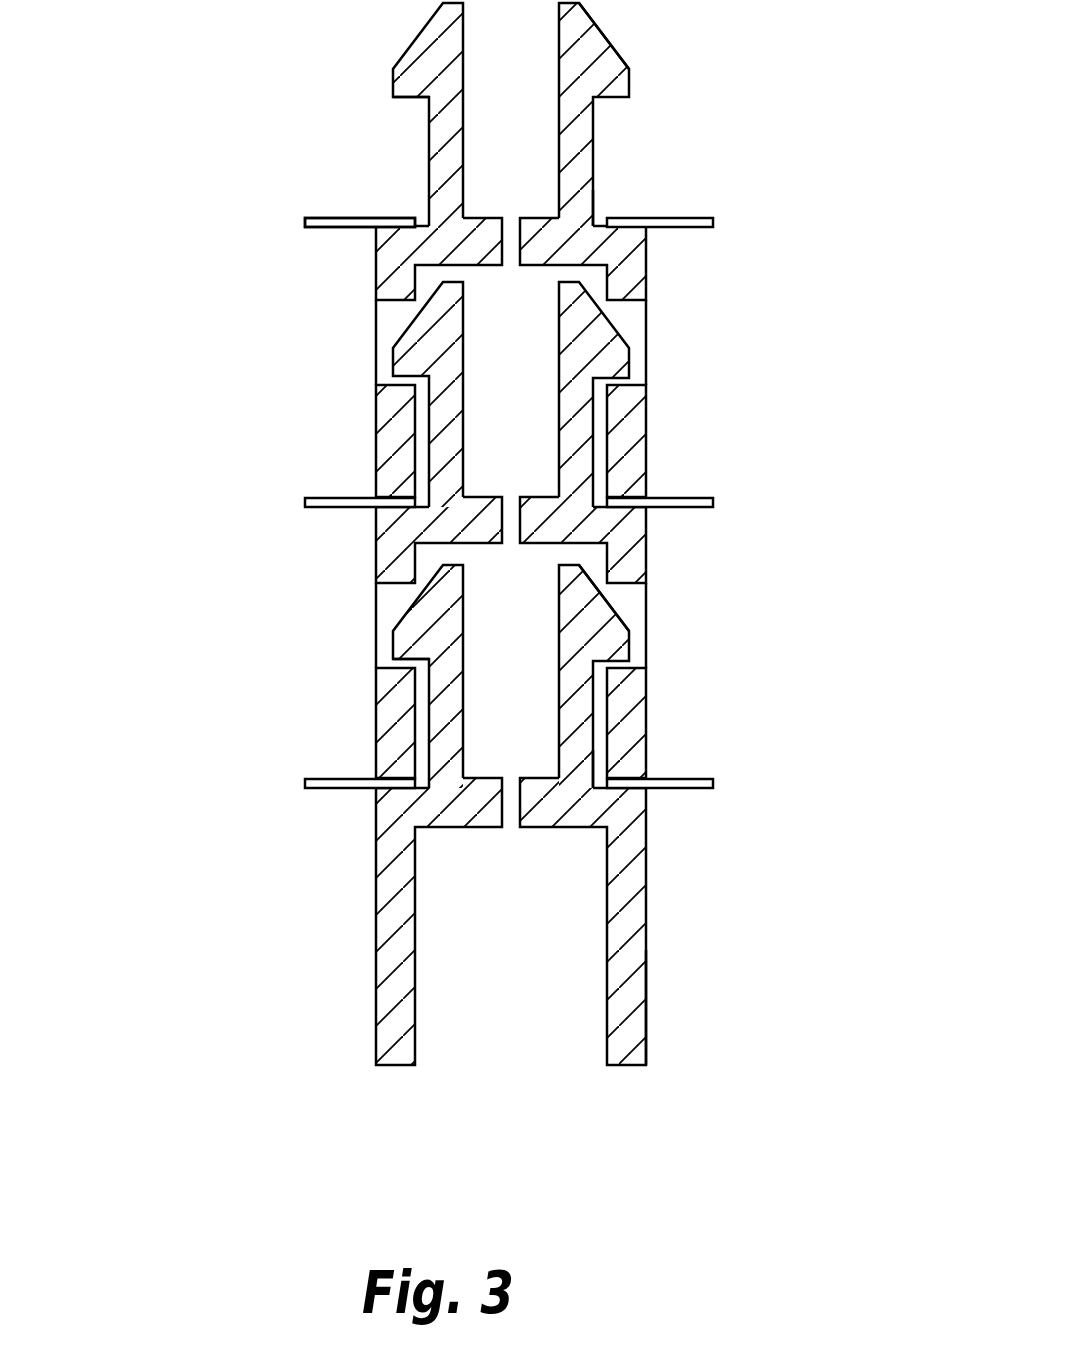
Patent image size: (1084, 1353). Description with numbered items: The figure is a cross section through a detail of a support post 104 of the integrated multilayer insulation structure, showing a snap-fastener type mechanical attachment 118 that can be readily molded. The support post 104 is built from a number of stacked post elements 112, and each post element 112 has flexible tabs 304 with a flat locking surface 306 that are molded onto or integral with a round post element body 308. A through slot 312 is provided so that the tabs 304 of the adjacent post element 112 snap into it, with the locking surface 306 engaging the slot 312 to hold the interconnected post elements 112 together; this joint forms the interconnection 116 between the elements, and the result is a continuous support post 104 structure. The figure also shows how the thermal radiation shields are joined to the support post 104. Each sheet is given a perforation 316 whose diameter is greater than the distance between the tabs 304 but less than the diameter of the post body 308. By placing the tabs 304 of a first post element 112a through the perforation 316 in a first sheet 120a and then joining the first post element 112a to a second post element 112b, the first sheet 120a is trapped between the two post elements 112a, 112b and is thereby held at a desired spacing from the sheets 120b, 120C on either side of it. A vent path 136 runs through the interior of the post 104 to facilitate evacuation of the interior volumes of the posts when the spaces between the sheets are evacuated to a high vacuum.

The support post 104 is at (658, 1006).
The post element 112 is at (377, 913).
The first post element 112a is at (622, 723).
The second post element 112b is at (620, 442).
The interconnection 116 is at (292, 217).
The mechanical attachment 118 is at (402, 62).
The first sheet 120a is at (699, 512).
The sheet 120b is at (687, 217).
The sheet 120C is at (318, 778).
The vent path 136 is at (504, 954).
The flexible tab 304 is at (630, 93).
The flat locking surface 306 is at (413, 100).
The post element body 308 is at (647, 258).
The through slot 312 is at (647, 333).
The perforation 316 is at (597, 212).